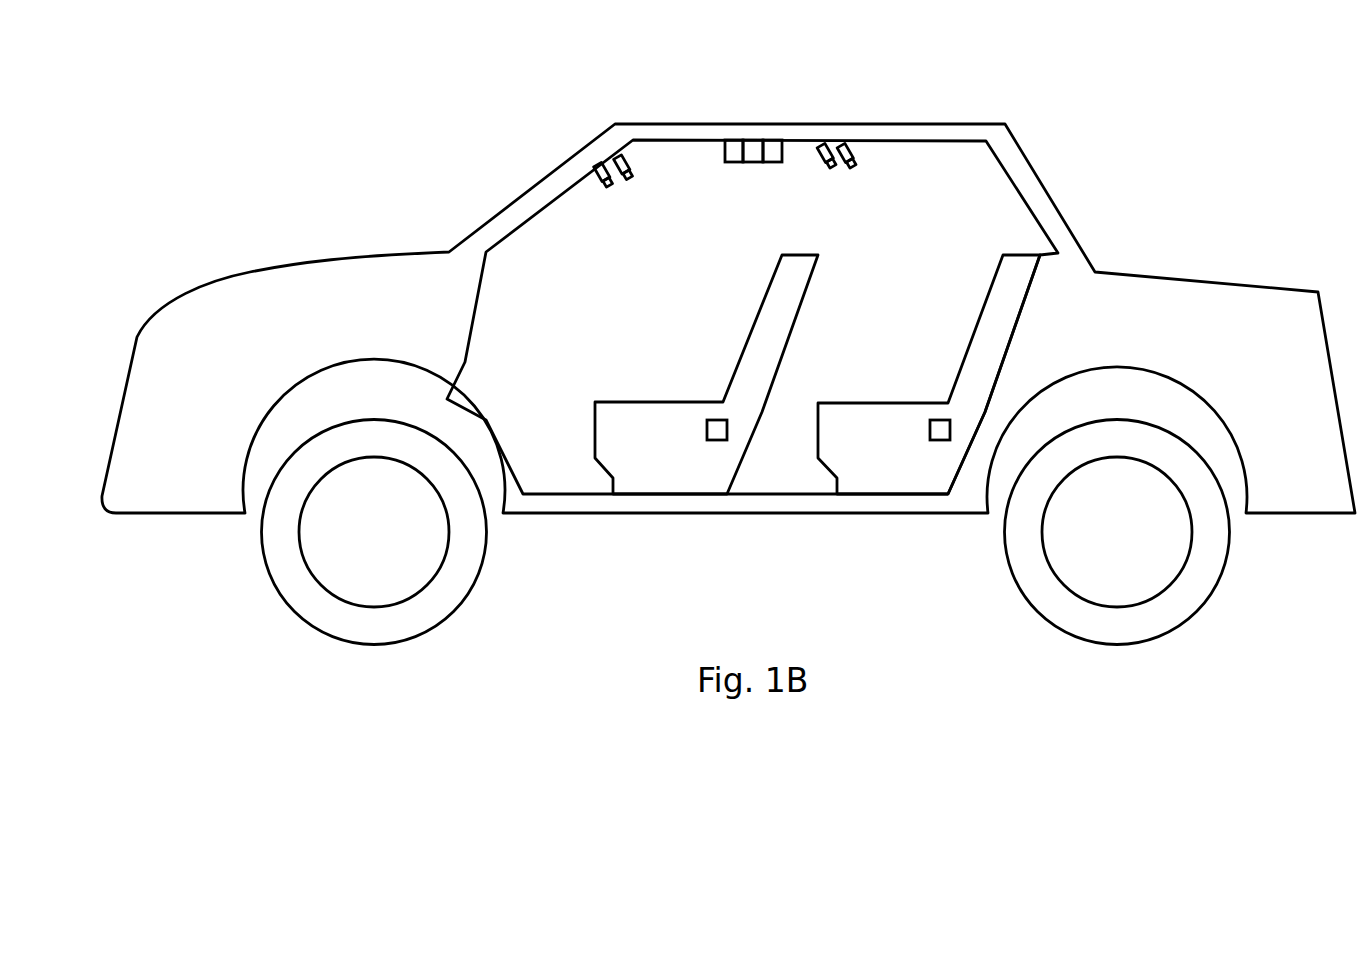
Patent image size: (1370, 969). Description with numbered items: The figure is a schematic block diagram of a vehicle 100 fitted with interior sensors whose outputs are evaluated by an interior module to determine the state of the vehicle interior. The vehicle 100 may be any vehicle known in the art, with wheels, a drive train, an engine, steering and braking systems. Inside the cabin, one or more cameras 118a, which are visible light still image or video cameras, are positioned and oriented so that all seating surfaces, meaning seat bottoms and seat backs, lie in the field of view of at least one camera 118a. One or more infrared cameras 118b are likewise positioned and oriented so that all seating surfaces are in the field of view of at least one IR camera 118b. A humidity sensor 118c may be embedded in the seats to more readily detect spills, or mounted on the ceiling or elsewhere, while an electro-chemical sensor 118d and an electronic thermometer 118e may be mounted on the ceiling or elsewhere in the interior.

The vehicle 100 is at (318, 272).
The camera 118a is at (630, 153).
The infrared (IR) camera 118b is at (598, 172).
The humidity sensor 118c is at (778, 147).
The electro-chemical sensor 118d is at (738, 147).
The electronic thermometer 118e is at (755, 147).